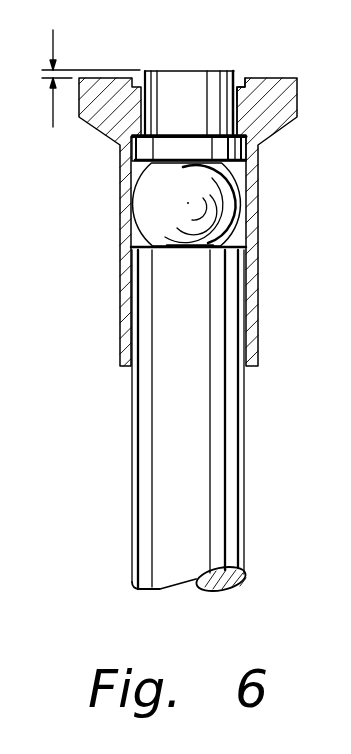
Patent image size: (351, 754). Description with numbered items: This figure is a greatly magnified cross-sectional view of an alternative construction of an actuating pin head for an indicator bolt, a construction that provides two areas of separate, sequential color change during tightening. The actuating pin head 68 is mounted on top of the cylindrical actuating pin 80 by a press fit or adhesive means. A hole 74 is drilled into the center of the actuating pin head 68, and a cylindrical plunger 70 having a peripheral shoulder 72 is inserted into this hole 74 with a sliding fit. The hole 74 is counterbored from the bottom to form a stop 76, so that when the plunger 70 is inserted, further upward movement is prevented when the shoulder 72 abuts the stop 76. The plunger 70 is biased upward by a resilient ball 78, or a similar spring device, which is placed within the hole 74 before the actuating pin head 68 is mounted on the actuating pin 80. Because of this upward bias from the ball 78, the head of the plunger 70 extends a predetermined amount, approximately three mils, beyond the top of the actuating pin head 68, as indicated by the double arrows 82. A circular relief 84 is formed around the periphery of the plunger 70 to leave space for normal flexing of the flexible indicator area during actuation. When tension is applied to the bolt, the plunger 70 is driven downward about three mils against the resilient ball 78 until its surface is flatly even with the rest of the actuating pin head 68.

The actuating pin head 68 is at (113, 134).
The cylindrical plunger 70 is at (158, 70).
The peripheral shoulder 72 is at (218, 148).
The hole 74 is at (140, 172).
The stop 76 is at (240, 133).
The resilient ball 78 is at (168, 204).
The cylindrical actuating pin 80 is at (177, 448).
The double arrows 82 is at (90, 67).
The circular relief 84 is at (240, 78).